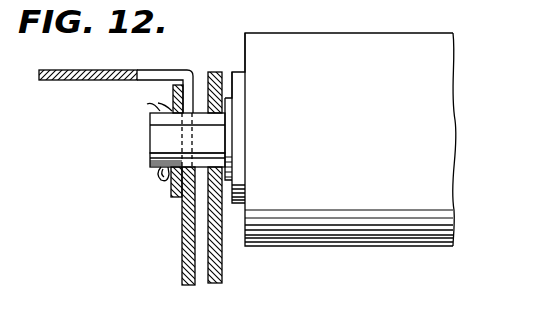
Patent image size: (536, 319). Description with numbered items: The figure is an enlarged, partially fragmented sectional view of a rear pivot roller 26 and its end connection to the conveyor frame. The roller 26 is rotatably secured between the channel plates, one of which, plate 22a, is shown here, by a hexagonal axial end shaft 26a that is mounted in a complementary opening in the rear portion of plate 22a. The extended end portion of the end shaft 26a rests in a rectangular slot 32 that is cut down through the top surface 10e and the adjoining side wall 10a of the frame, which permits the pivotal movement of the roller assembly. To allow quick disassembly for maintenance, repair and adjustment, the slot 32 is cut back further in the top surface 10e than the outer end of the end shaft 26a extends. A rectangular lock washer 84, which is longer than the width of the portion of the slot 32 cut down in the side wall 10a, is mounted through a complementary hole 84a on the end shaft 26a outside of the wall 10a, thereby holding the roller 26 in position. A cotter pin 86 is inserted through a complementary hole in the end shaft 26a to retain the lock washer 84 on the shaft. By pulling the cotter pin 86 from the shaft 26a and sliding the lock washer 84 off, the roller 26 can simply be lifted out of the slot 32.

The top surface 10e is at (81, 68).
The rectangular slot 32 is at (147, 70).
The rectangular lock washer 84 is at (172, 88).
The hexagonal axial end shaft 26a is at (160, 132).
The complementary hole 84a is at (160, 163).
The cotter pin 86 is at (160, 180).
The side wall 10a is at (182, 243).
The plate 22a is at (220, 265).
The pivot roller 26 is at (340, 139).